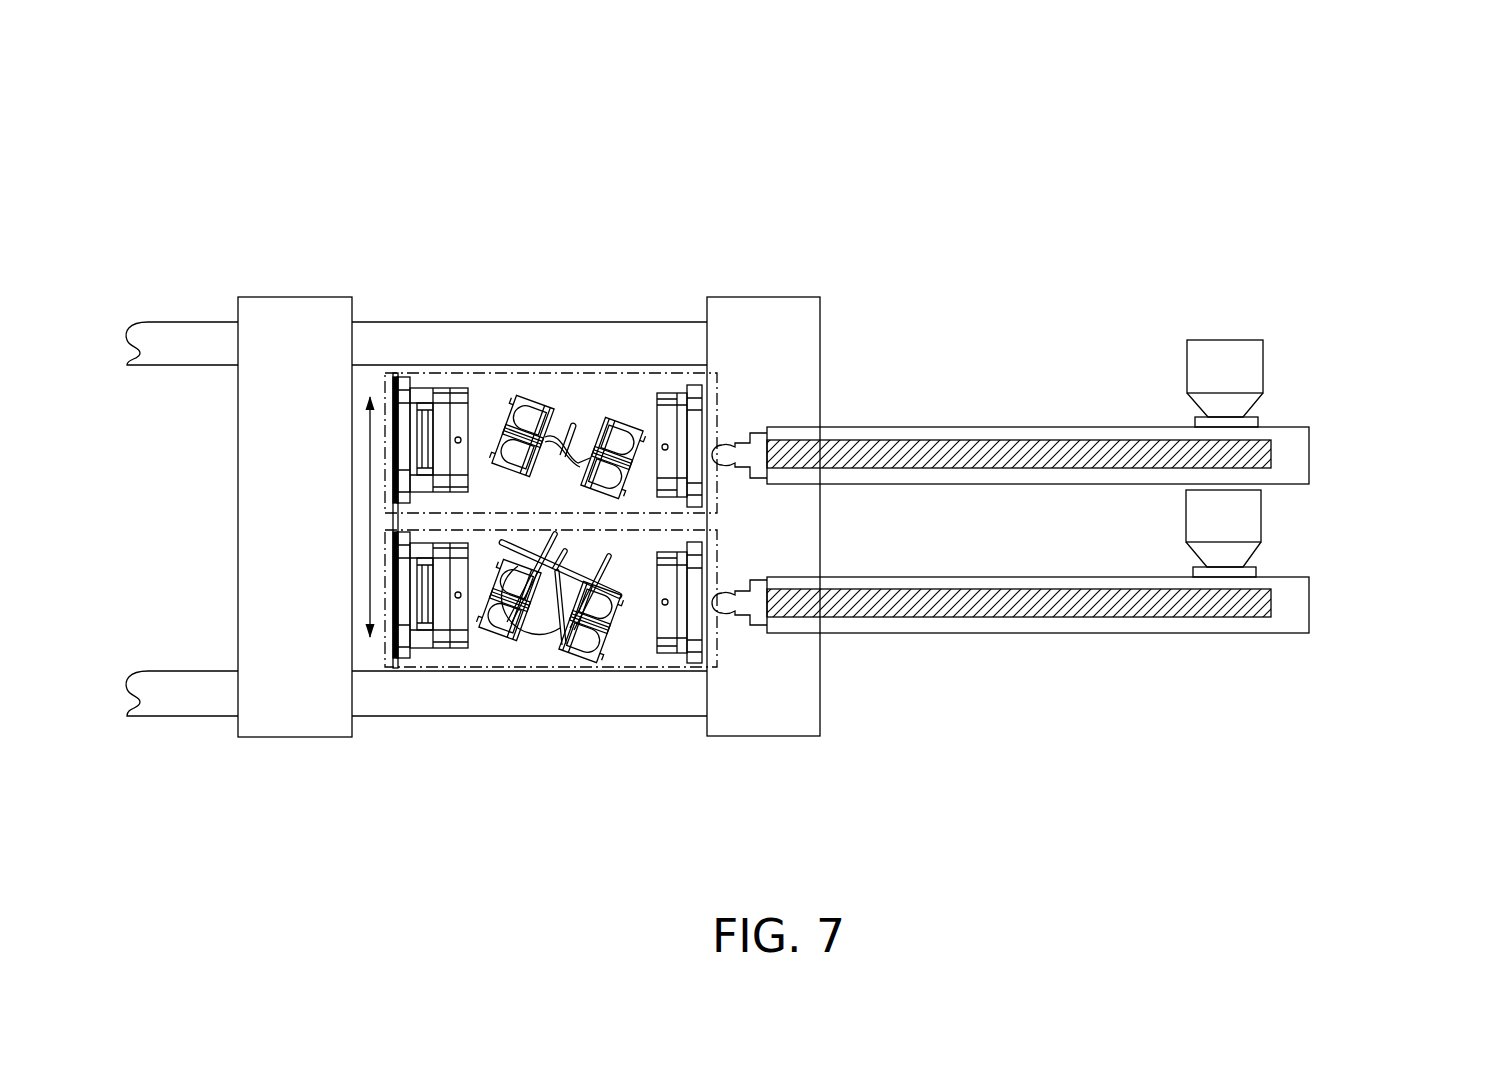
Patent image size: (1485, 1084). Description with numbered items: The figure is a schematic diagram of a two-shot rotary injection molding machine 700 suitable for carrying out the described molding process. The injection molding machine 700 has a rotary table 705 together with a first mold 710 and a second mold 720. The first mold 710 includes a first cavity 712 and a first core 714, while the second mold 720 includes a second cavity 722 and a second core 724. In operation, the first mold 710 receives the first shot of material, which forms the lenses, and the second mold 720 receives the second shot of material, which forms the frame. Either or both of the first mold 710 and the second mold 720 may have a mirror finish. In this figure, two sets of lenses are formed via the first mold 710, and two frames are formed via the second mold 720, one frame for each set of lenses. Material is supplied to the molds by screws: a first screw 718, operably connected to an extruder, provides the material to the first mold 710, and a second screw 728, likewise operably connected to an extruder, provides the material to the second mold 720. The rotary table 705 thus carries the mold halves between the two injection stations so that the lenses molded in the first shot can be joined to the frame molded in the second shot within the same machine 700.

The rotary injection molding machine 700 is at (290, 130).
The rotary table 705 is at (374, 375).
The first mold 710 is at (552, 388).
The first cavity 712 is at (682, 422).
The first core 714 is at (445, 378).
The first screw 718 is at (1297, 427).
The second mold 720 is at (553, 677).
The second cavity 722 is at (667, 658).
The second core 724 is at (427, 630).
The second screw 728 is at (1278, 633).